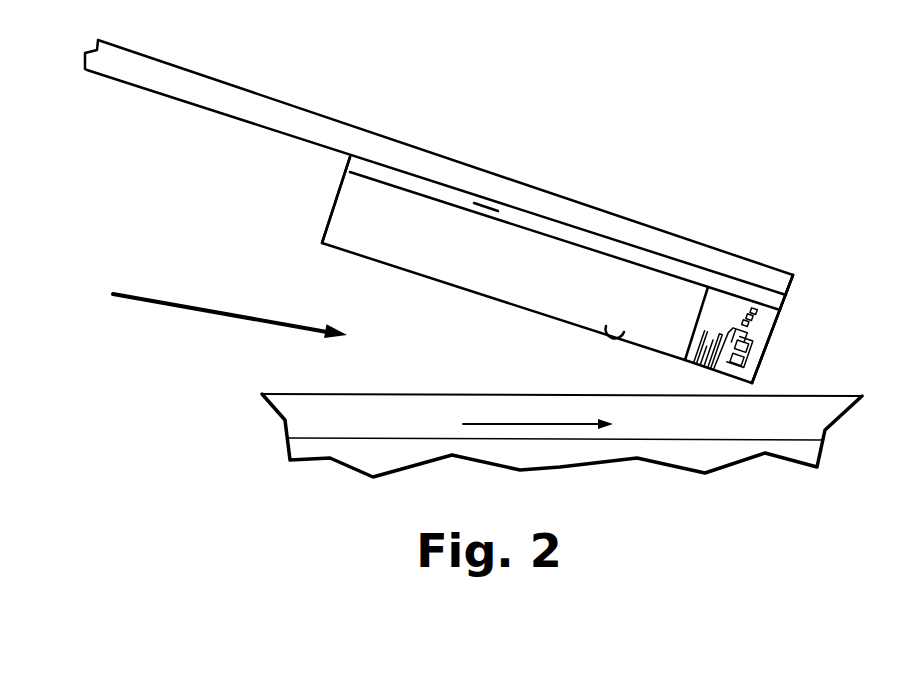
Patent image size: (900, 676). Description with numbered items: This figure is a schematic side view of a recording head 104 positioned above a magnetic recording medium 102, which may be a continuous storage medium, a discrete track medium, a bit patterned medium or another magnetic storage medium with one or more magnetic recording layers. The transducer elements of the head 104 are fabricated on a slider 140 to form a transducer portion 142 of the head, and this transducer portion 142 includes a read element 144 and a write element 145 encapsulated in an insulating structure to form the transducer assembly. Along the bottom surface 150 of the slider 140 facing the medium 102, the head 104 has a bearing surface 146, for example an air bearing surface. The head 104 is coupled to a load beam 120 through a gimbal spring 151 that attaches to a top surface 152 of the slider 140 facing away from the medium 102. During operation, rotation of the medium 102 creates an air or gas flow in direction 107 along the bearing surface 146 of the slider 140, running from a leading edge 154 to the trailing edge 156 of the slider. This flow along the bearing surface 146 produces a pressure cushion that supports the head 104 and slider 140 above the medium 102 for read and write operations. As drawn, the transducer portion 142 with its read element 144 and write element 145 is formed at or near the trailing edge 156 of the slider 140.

The medium 102 is at (796, 428).
The head 104 is at (787, 262).
The direction 107 is at (537, 422).
The load beam 120 is at (370, 147).
The slider 140 is at (548, 262).
The transducer portion 142 is at (796, 308).
The read element 144 is at (714, 310).
The write element 145 is at (767, 294).
The bearing surface 146 is at (486, 311).
The bottom surface 150 is at (625, 338).
The gimbal spring 151 is at (488, 204).
The top surface 152 is at (620, 252).
The leading edge 154 is at (335, 201).
The trailing edge 156 is at (773, 338).